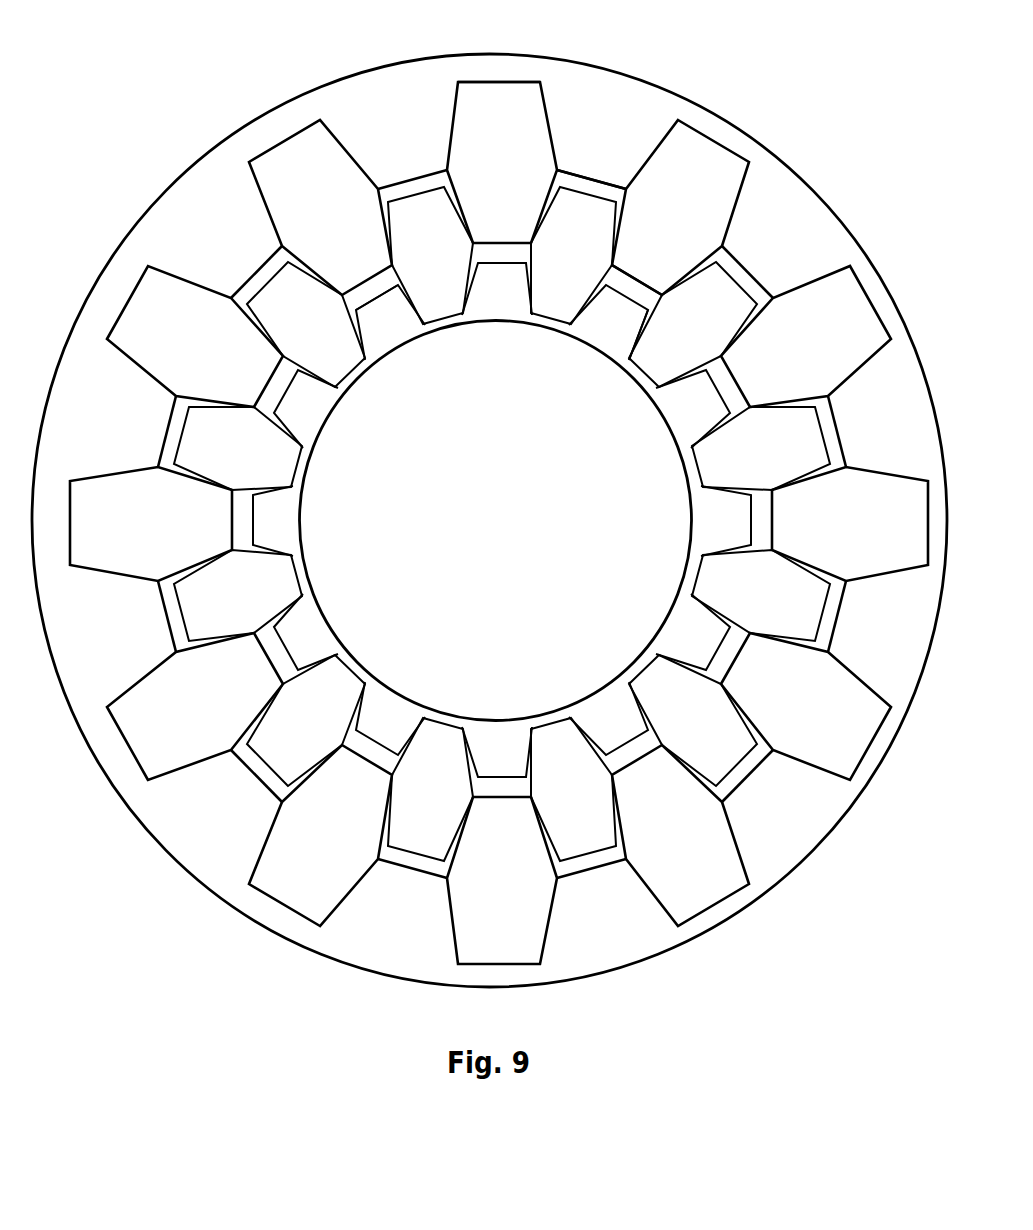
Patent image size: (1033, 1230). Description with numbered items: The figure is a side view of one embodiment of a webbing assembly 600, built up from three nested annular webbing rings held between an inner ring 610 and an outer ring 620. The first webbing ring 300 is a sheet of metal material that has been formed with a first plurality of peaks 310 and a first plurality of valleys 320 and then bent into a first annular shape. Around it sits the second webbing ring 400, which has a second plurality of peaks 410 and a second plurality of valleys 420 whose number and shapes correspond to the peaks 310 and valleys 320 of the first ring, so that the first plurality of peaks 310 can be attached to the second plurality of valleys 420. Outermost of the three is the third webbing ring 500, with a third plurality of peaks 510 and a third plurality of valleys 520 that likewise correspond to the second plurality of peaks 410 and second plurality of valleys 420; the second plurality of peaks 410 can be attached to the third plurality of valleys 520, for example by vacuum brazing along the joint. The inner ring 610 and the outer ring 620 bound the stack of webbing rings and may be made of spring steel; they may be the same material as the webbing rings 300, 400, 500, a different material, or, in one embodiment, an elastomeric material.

The first webbing ring 300 is at (690, 622).
The first plurality of peaks 310 is at (372, 299).
The first plurality of valleys 320 is at (638, 370).
The second webbing ring 400 is at (195, 355).
The second plurality of peaks 410 is at (410, 185).
The second plurality of valleys 420 is at (628, 278).
The third webbing ring 500 is at (264, 134).
The third plurality of peaks 510 is at (513, 80).
The third plurality of valleys 520 is at (592, 177).
The webbing assembly 600 is at (150, 107).
The inner ring 610 is at (383, 690).
The outer ring 620 is at (182, 872).